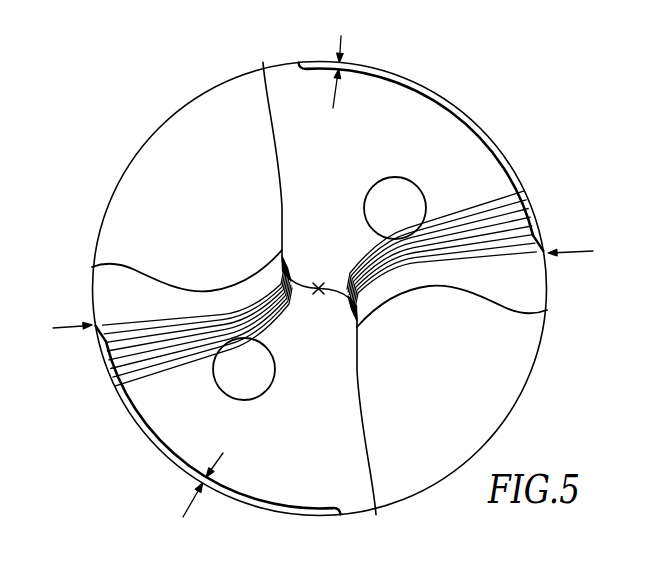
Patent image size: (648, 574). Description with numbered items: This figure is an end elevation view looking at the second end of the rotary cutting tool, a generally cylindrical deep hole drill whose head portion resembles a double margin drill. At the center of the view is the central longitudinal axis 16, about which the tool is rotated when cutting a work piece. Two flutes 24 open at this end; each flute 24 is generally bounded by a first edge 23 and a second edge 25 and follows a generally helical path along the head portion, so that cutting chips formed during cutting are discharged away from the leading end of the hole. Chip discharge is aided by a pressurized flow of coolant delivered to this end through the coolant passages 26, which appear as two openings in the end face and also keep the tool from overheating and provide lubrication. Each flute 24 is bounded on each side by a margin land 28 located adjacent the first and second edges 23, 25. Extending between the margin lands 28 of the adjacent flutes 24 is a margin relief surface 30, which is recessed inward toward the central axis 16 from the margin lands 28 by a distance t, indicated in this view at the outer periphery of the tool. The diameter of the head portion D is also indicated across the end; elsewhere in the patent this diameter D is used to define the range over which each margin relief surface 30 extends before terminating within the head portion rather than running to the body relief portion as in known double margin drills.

The central longitudinal axis 16 is at (321, 284).
The first edge 23 is at (263, 64).
The flute 24 is at (155, 153).
The second edge 25 is at (92, 267).
The coolant passage 26 is at (384, 197).
The margin land 28 is at (284, 62).
The margin relief surface 30 is at (420, 93).
The distance t is at (342, 38).
The diameter of the head portion D is at (578, 248).